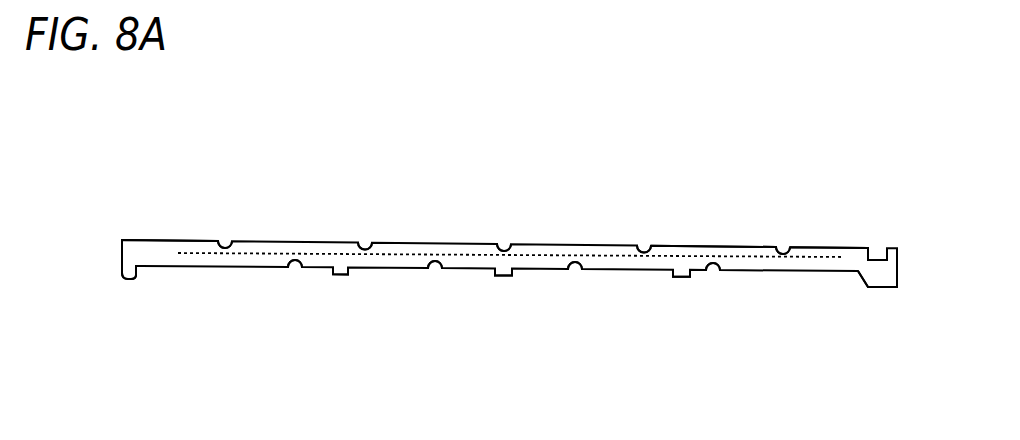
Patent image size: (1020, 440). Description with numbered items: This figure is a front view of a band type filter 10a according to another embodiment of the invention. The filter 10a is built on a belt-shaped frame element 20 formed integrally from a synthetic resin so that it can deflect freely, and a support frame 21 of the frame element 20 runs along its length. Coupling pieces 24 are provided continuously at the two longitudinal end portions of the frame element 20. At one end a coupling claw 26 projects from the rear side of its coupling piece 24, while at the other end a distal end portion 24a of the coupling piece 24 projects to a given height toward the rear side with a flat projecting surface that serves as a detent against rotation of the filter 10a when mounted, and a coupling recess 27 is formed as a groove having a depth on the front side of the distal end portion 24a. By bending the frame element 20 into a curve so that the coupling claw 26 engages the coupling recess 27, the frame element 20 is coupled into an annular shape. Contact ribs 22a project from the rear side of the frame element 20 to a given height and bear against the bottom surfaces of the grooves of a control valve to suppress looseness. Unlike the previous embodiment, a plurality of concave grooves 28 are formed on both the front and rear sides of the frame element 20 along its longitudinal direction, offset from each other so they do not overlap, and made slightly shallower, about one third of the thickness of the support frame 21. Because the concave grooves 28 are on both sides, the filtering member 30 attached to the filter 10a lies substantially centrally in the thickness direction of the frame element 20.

The filter 10a is at (509, 253).
The frame element 20 is at (401, 239).
The support frame 21 is at (606, 246).
The contact rib 22a is at (505, 275).
The coupling piece 24 is at (146, 250).
The distal end portion 24a is at (877, 278).
The coupling claw 26 is at (133, 280).
The coupling recess 27 is at (875, 246).
The concave groove 28 is at (225, 244).
The filtering member 30 is at (390, 257).